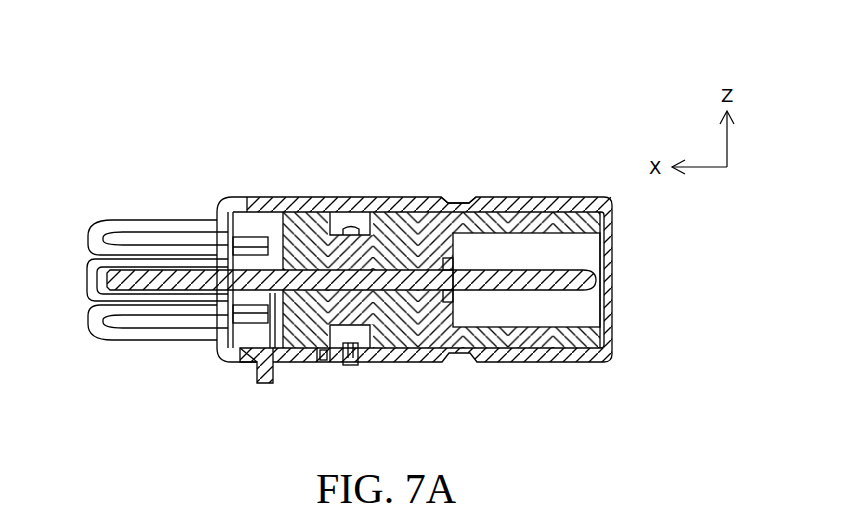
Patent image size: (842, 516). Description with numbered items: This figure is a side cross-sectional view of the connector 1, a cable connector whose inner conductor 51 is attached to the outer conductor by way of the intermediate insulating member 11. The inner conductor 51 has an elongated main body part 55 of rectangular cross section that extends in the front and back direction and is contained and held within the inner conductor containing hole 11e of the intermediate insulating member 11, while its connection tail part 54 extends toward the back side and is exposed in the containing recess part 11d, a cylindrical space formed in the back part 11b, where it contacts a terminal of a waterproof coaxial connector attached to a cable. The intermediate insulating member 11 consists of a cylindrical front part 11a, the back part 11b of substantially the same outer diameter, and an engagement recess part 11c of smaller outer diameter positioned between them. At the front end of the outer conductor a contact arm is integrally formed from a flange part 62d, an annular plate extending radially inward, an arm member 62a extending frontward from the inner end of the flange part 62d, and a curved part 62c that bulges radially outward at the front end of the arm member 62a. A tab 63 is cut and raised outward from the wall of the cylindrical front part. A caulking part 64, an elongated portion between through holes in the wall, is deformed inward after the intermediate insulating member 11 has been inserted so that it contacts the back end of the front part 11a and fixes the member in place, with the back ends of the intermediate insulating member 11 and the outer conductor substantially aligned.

The connector 1 is at (207, 190).
The intermediate insulating member 11 is at (560, 363).
The front part 11a is at (297, 210).
The back part 11b is at (458, 206).
The engagement recess part 11c is at (339, 230).
The containing recess part 11d is at (580, 248).
The inner conductor containing hole 11e is at (413, 215).
The inner conductor 51 is at (428, 300).
The connection tail part 54 is at (545, 266).
The main body part 55 is at (405, 296).
The arm member 62a is at (152, 343).
The curved part 62c is at (104, 343).
The flange part 62d is at (215, 350).
The tab 63 is at (271, 385).
The caulking part 64 is at (349, 366).